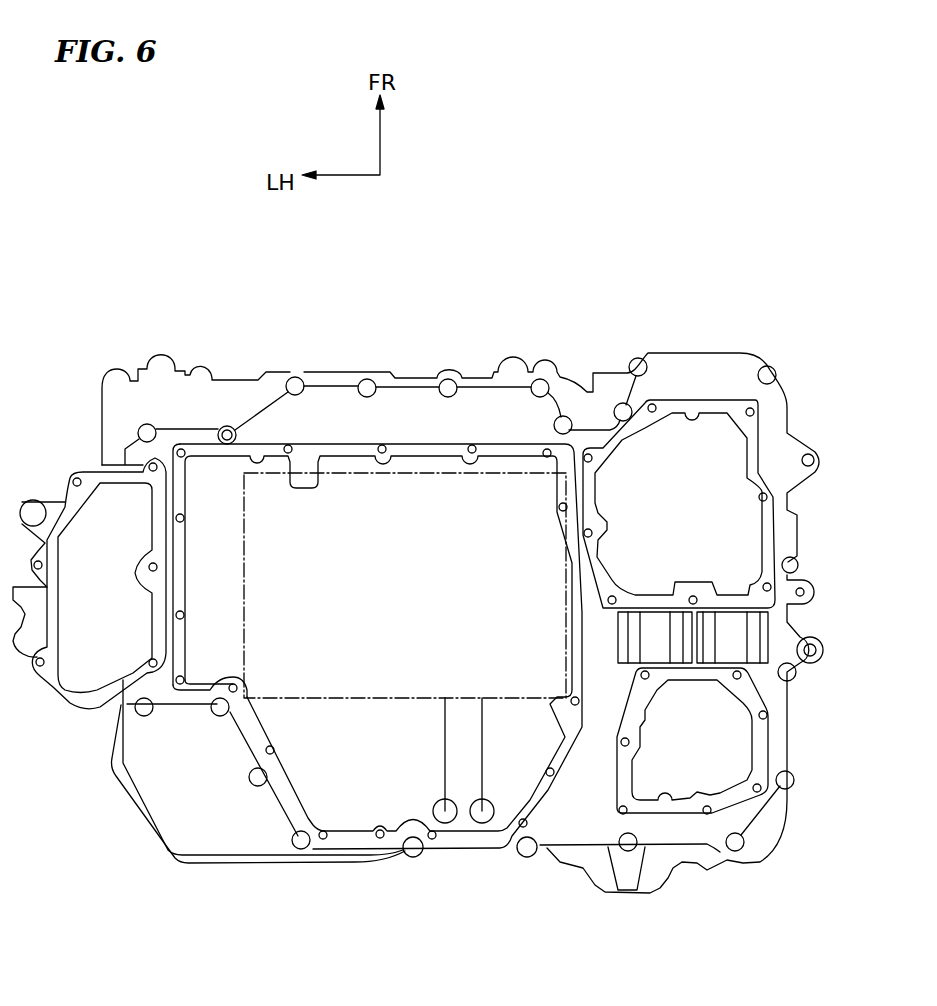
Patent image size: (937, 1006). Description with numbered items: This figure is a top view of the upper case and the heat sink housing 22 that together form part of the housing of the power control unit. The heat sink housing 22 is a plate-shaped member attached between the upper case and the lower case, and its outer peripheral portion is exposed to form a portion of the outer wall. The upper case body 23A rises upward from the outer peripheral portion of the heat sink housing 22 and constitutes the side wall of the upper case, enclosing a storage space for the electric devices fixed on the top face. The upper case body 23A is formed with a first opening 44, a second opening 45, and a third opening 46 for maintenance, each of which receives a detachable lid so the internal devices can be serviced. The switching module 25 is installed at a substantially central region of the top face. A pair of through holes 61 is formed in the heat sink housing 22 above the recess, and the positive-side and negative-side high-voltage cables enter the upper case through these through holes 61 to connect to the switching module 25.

The heat sink housing 22 is at (352, 790).
The upper case body 23A is at (272, 812).
The switching module 25 is at (413, 473).
The first opening 44 is at (258, 457).
The second opening 45 is at (697, 414).
The third opening 46 is at (668, 797).
The through hole 61 is at (445, 823).